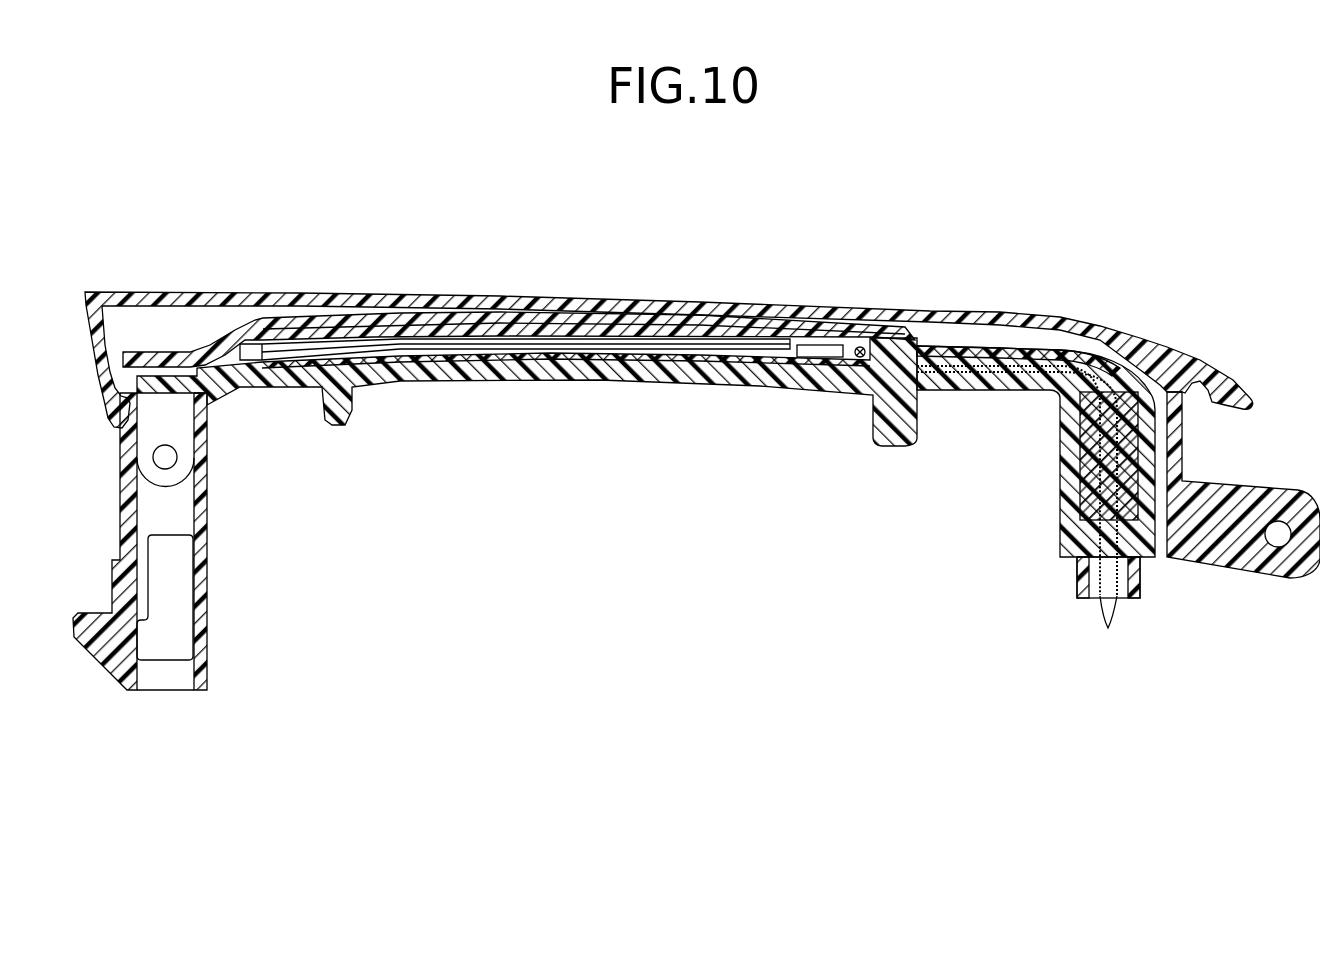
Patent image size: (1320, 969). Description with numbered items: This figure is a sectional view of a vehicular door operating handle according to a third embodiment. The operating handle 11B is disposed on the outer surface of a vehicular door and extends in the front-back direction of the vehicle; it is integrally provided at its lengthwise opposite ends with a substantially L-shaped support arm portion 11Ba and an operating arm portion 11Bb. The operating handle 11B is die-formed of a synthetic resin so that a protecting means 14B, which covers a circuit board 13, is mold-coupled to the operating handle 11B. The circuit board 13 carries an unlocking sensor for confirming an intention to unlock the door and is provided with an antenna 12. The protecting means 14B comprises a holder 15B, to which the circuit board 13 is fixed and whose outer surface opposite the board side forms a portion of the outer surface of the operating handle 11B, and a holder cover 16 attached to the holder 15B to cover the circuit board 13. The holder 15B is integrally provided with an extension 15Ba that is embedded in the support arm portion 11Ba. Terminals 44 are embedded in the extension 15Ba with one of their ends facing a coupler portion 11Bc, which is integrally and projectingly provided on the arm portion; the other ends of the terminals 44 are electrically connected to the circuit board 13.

The operating handle 11B is at (717, 300).
The support arm portion 11Ba is at (1203, 479).
The operating arm portion 11Bb is at (204, 578).
The coupler portion 11Bc is at (1077, 582).
The antenna 12 is at (588, 346).
The circuit board 13 is at (627, 378).
The protecting means 14B is at (517, 323).
The holder 15B is at (947, 390).
The extension 15Ba is at (1095, 480).
The holder cover 16 is at (806, 324).
The terminals 44 is at (1020, 514).